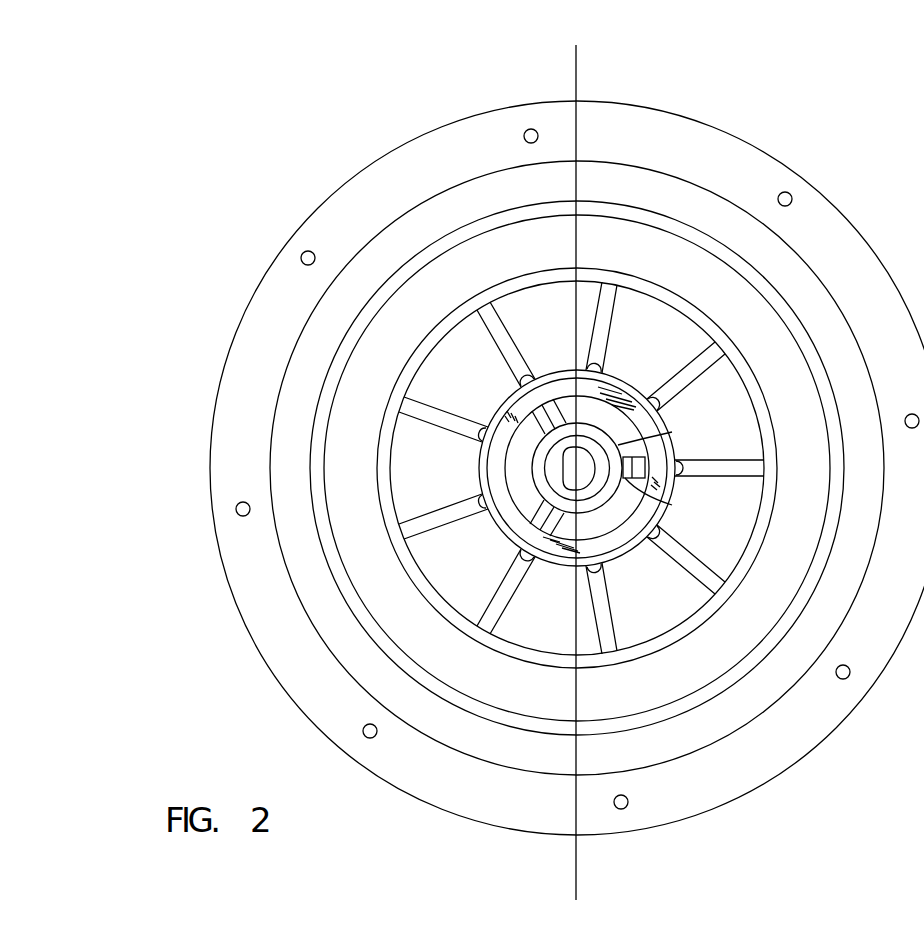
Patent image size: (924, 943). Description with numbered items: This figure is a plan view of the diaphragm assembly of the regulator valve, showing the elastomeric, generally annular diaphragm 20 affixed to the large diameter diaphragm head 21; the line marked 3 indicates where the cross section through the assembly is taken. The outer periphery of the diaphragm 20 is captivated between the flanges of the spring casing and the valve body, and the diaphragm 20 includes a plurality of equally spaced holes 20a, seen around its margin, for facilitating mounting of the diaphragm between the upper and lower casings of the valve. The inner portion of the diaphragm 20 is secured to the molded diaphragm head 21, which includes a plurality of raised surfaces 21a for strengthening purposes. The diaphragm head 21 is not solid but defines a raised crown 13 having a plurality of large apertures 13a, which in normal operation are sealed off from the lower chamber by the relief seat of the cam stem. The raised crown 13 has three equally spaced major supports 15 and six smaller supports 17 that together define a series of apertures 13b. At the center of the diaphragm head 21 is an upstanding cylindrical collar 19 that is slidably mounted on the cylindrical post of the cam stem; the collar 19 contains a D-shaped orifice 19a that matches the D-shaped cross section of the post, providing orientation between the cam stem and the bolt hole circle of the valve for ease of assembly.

The section line 3- 3 is at (576, 45).
The diaphragm 20 is at (390, 148).
The holes 20a is at (791, 192).
The diaphragm head 21 is at (638, 203).
The raised surfaces 21a is at (694, 302).
The smaller supports 17 is at (650, 395).
The raised crown 13 is at (488, 411).
The large apertures 13a is at (612, 423).
The apertures 13b is at (675, 446).
The major supports 15 is at (528, 420).
The collar 19 is at (660, 440).
The D-shaped orifice 19a is at (586, 480).